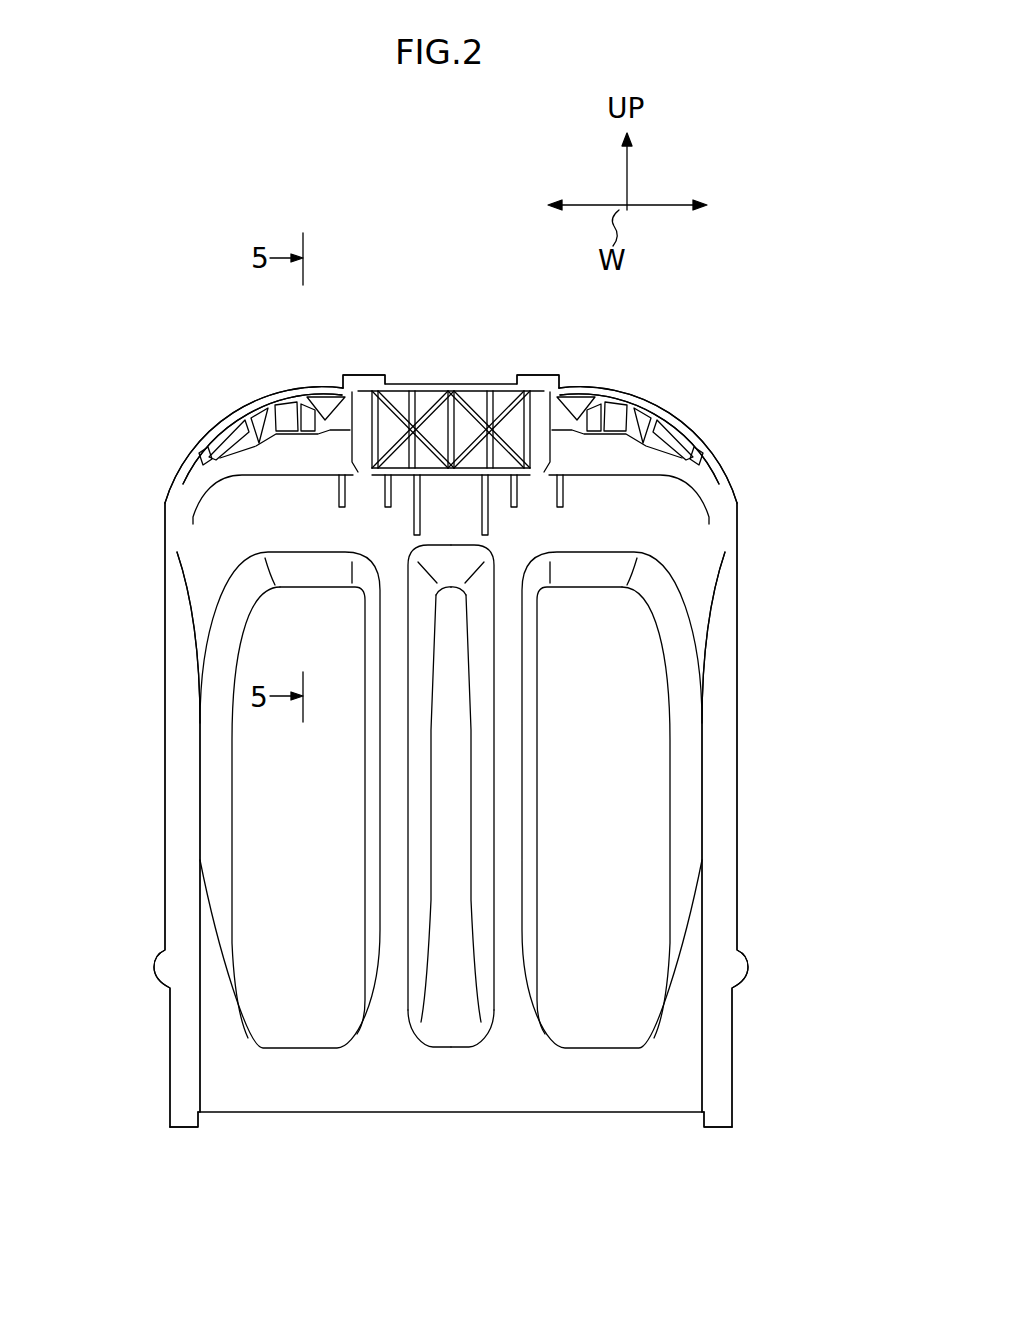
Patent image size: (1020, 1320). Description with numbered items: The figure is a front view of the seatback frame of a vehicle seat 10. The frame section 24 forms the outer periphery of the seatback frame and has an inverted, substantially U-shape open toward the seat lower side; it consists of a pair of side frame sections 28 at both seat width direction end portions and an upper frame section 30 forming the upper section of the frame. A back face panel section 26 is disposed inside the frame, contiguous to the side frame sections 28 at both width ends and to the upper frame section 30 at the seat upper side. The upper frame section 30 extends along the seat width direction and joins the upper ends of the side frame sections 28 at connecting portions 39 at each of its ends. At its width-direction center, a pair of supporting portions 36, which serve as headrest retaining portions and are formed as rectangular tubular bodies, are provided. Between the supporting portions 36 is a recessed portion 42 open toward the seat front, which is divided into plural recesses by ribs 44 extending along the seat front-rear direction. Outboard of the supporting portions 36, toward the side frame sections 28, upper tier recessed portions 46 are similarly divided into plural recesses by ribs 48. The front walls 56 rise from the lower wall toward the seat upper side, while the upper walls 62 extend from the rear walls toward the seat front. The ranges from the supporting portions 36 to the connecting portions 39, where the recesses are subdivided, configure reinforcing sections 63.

The vehicle seat 10 is at (214, 304).
The frame section 24 is at (167, 573).
The back face panel section 26 is at (437, 1097).
The side frame section 28 is at (166, 788).
The upper frame section 30 is at (474, 388).
The supporting portion 36 is at (367, 376).
The connecting portion 39 is at (178, 520).
The recessed portion 42 is at (465, 430).
The rib 44 is at (426, 392).
The recessed portion 46 is at (326, 400).
The rib 48 is at (266, 406).
The front wall 56 is at (288, 463).
The upper wall 62 is at (263, 400).
The reinforcing section 63 is at (212, 445).